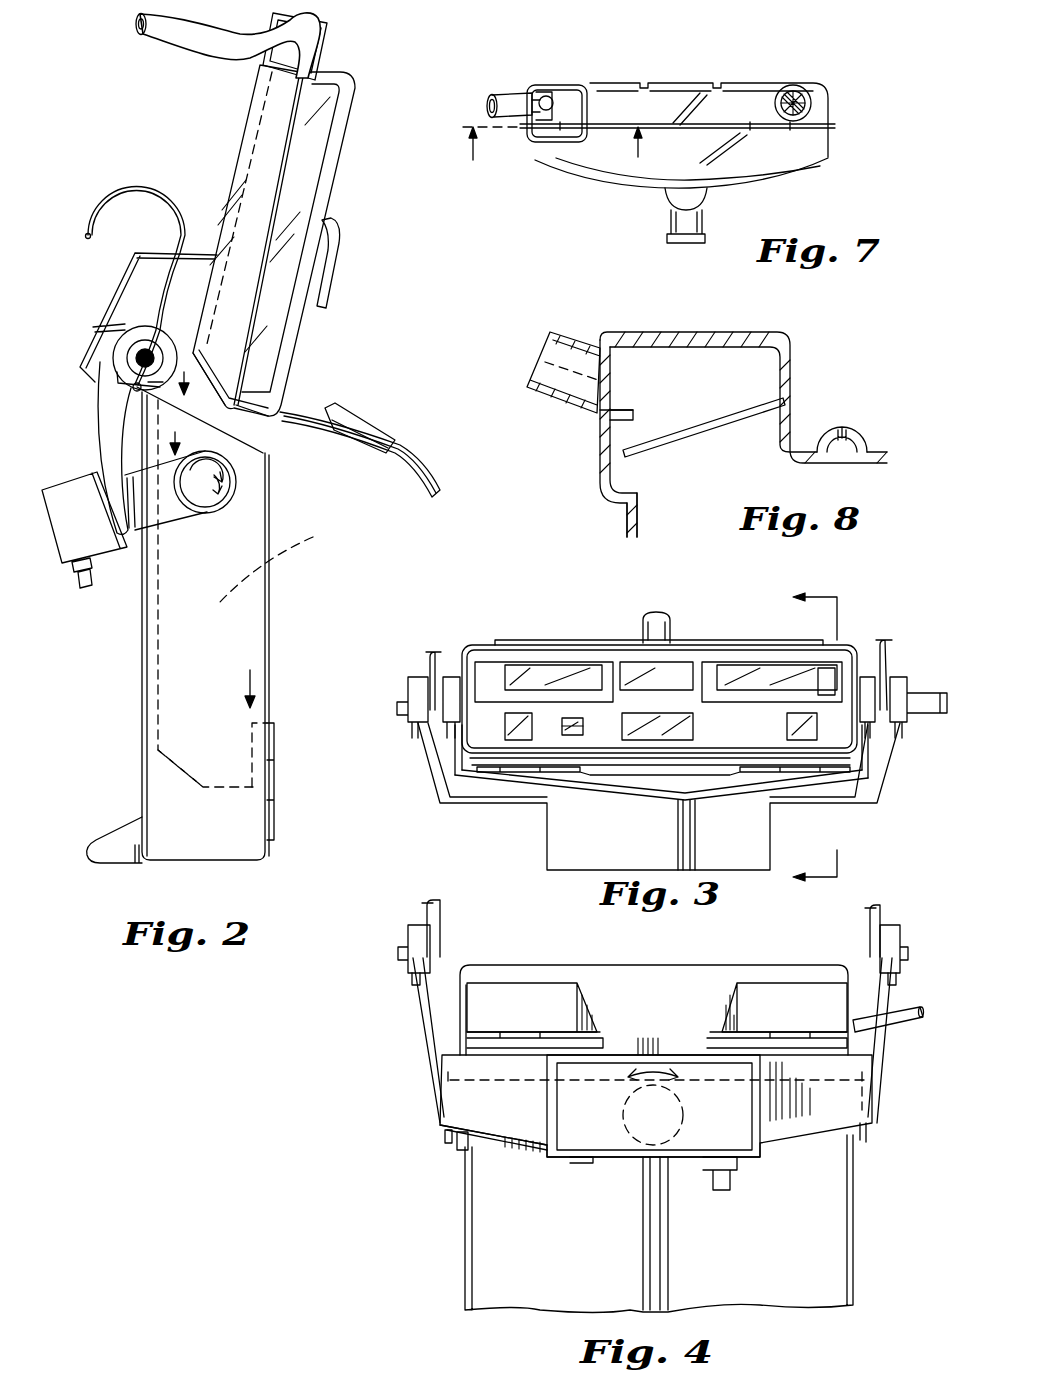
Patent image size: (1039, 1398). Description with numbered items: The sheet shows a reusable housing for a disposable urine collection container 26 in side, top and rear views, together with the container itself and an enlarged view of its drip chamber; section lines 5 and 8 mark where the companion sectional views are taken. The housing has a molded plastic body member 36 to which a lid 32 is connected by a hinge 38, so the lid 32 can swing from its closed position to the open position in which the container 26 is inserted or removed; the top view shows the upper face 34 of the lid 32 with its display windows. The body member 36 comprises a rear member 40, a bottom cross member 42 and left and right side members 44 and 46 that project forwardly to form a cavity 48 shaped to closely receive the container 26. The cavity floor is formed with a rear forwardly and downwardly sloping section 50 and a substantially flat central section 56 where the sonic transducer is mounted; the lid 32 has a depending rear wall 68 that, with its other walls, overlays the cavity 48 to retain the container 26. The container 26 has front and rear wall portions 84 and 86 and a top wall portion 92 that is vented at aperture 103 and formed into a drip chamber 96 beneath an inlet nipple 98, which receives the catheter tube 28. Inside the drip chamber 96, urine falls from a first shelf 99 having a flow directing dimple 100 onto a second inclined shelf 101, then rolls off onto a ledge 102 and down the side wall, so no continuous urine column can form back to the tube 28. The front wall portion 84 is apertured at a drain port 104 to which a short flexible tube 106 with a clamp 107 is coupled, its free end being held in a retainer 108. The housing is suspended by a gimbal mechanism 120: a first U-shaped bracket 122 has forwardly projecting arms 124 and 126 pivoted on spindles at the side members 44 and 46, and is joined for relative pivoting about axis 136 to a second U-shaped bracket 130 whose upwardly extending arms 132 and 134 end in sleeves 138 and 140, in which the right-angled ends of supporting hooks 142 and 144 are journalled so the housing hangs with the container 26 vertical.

In FIG. 3, the section line 5- 5 is at (815, 737).
In FIG. 7, the section line 8- 8 is at (556, 148).
In FIG. 2, the urine collection container 26 is at (328, 210).
In FIG. 7, the urine collection container 26 is at (838, 66).
In FIG. 8, the urine collection container 26 is at (883, 454).
In FIG. 2, the catheter tube 28 is at (180, 50).
In FIG. 4, the catheter tube 28 is at (913, 1008).
In FIG. 2, the lid 32 is at (114, 294).
In FIG. 4, the lid 32 is at (731, 966).
In FIG. 3, the display face 34 is at (533, 672).
In FIG. 2, the body member 36 is at (267, 623).
In FIG. 4, the body member 36 is at (465, 1243).
In FIG. 2, the hinge 38 is at (130, 390).
In FIG. 3, the hinge 38 is at (565, 773).
In FIG. 4, the hinge 38 is at (498, 1032).
In FIG. 2, the rear member 40 is at (143, 718).
In FIG. 2, the bottom cross member 42 is at (270, 848).
In FIG. 3, the right side member 44 is at (860, 663).
In FIG. 3, the left side member 46 is at (460, 655).
In FIG. 2, the cavity 48 is at (278, 555).
In FIG. 2, the rear forwardly and downwardly sloping section 50 is at (173, 760).
In FIG. 2, the flat central section 56 is at (220, 790).
In FIG. 4, the rear wall 68 is at (630, 982).
In FIG. 7, the front wall portion 84 is at (789, 176).
In FIG. 7, the rear wall portion 86 is at (750, 80).
In FIG. 7, the top wall portion 92 is at (690, 105).
In FIG. 7, the drip chamber 96 is at (566, 84).
In FIG. 8, the drip chamber 96 is at (690, 332).
In FIG. 7, the inlet nipple 98 is at (512, 93).
In FIG. 8, the inlet nipple 98 is at (568, 330).
In FIG. 7, the first shelf 99 is at (548, 132).
In FIG. 8, the first shelf 99 is at (640, 417).
In FIG. 7, the flow directing dimple 100 is at (548, 95).
In FIG. 8, the flow directing dimple 100 is at (632, 408).
In FIG. 8, the second inclined shelf 101 is at (718, 413).
In FIG. 8, the ledge 102 is at (623, 503).
In FIG. 7, the aperture 103 is at (812, 104).
In FIG. 2, the drain port 104 is at (278, 400).
In FIG. 2, the flexible tube 106 is at (412, 457).
In FIG. 2, the clamp 107 is at (348, 412).
In FIG. 2, the retainer 108 is at (330, 293).
In FIG. 2, the gimbal mechanism 120 is at (72, 597).
In FIG. 3, the gimbal mechanism 120 is at (435, 812).
In FIG. 4, the gimbal mechanism 120 is at (388, 1108).
In FIG. 3, the first U-shaped bracket 122 is at (497, 785).
In FIG. 4, the first U-shaped bracket 122 is at (480, 1143).
In FIG. 3, the first forwardly projecting arm 124 is at (448, 753).
In FIG. 2, the second forwardly projecting arm 126 is at (167, 512).
In FIG. 3, the second forwardly projecting arm 126 is at (870, 747).
In FIG. 4, the second forwardly projecting arm 126 is at (860, 1140).
In FIG. 3, the second U-shaped bracket 130 is at (862, 810).
In FIG. 4, the second U-shaped bracket 130 is at (460, 1107).
In FIG. 2, the upwardly extending arm 132 is at (97, 440).
In FIG. 4, the upwardly extending arm 132 is at (887, 1040).
In FIG. 4, the upwardly extending arm 134 is at (413, 1030).
In FIG. 3, the axis 136 is at (657, 798).
In FIG. 4, the axis 136 is at (653, 1127).
In FIG. 4, the sleeve 138 is at (893, 937).
In FIG. 4, the sleeve 140 is at (407, 978).
In FIG. 2, the supporting hook 142 is at (118, 188).
In FIG. 4, the supporting hook 142 is at (875, 912).
In FIG. 4, the supporting hook 144 is at (440, 910).